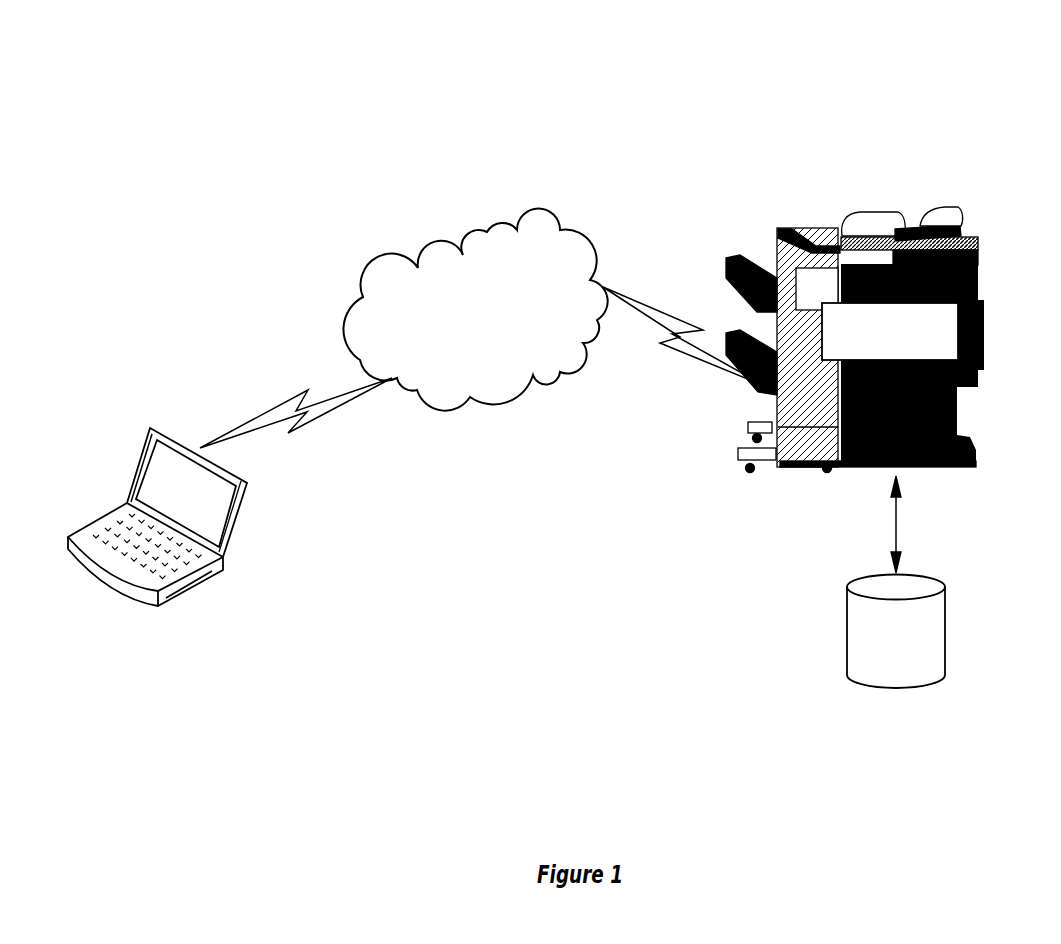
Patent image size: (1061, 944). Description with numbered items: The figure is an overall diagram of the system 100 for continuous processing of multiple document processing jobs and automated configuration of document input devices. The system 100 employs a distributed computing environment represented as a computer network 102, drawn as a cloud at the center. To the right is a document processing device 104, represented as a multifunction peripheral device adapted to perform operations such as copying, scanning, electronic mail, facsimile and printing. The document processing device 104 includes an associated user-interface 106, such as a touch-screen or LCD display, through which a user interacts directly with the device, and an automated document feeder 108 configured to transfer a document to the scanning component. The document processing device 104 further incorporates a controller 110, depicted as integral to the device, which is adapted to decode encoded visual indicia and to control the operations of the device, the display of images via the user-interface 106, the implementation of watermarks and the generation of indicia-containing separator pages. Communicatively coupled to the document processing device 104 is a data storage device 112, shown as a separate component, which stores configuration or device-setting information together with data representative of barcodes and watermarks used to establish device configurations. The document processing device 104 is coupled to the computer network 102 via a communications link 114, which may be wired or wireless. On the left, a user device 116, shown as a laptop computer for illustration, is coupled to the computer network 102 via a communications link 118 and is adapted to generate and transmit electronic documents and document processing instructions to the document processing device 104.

The system 100 is at (674, 72).
The computer network 102 is at (535, 207).
The document processing device 104 is at (885, 326).
The user-interface 106 is at (980, 254).
The automated document feeder 108 is at (882, 211).
The controller 110 is at (980, 306).
The data storage device 112 is at (945, 585).
The communications link 114 is at (665, 345).
The user device 116 is at (140, 470).
The communications link 118 is at (277, 405).